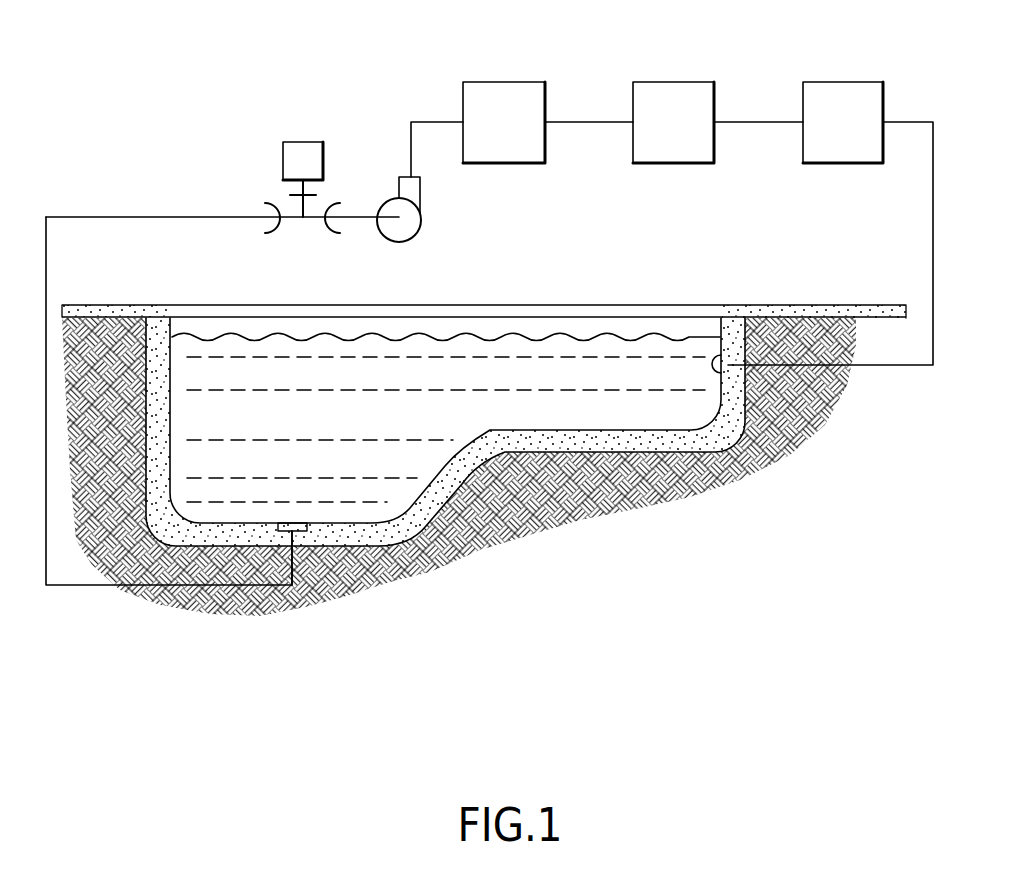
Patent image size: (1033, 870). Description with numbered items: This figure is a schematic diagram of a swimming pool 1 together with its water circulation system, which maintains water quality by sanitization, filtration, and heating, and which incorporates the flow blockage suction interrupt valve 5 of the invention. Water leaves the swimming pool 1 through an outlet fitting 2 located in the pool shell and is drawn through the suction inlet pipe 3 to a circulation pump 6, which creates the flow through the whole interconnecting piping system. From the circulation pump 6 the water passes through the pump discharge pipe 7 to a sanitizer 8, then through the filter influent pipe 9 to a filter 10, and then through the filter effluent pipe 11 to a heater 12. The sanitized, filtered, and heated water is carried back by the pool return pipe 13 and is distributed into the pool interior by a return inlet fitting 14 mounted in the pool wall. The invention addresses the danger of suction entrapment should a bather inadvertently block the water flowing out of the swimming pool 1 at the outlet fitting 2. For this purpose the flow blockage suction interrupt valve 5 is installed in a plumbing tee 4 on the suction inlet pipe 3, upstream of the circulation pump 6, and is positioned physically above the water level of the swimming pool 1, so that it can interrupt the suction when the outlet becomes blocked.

The swimming pool 1 is at (440, 453).
The outlet fitting 2 is at (297, 527).
The suction inlet pipe 3 is at (163, 585).
The plumbing tee 4 is at (293, 222).
The flow blockage suction interrupt valve 5 is at (303, 158).
The circulation pump 6 is at (413, 223).
The pump discharge pipe 7 is at (432, 121).
The sanitizer 8 is at (507, 90).
The filter influent pipe 9 is at (583, 121).
The filter 10 is at (670, 110).
The filter effluent pipe 11 is at (757, 122).
The heater 12 is at (857, 91).
The pool return pipe 13 is at (933, 235).
The return inlet fitting 14 is at (712, 364).